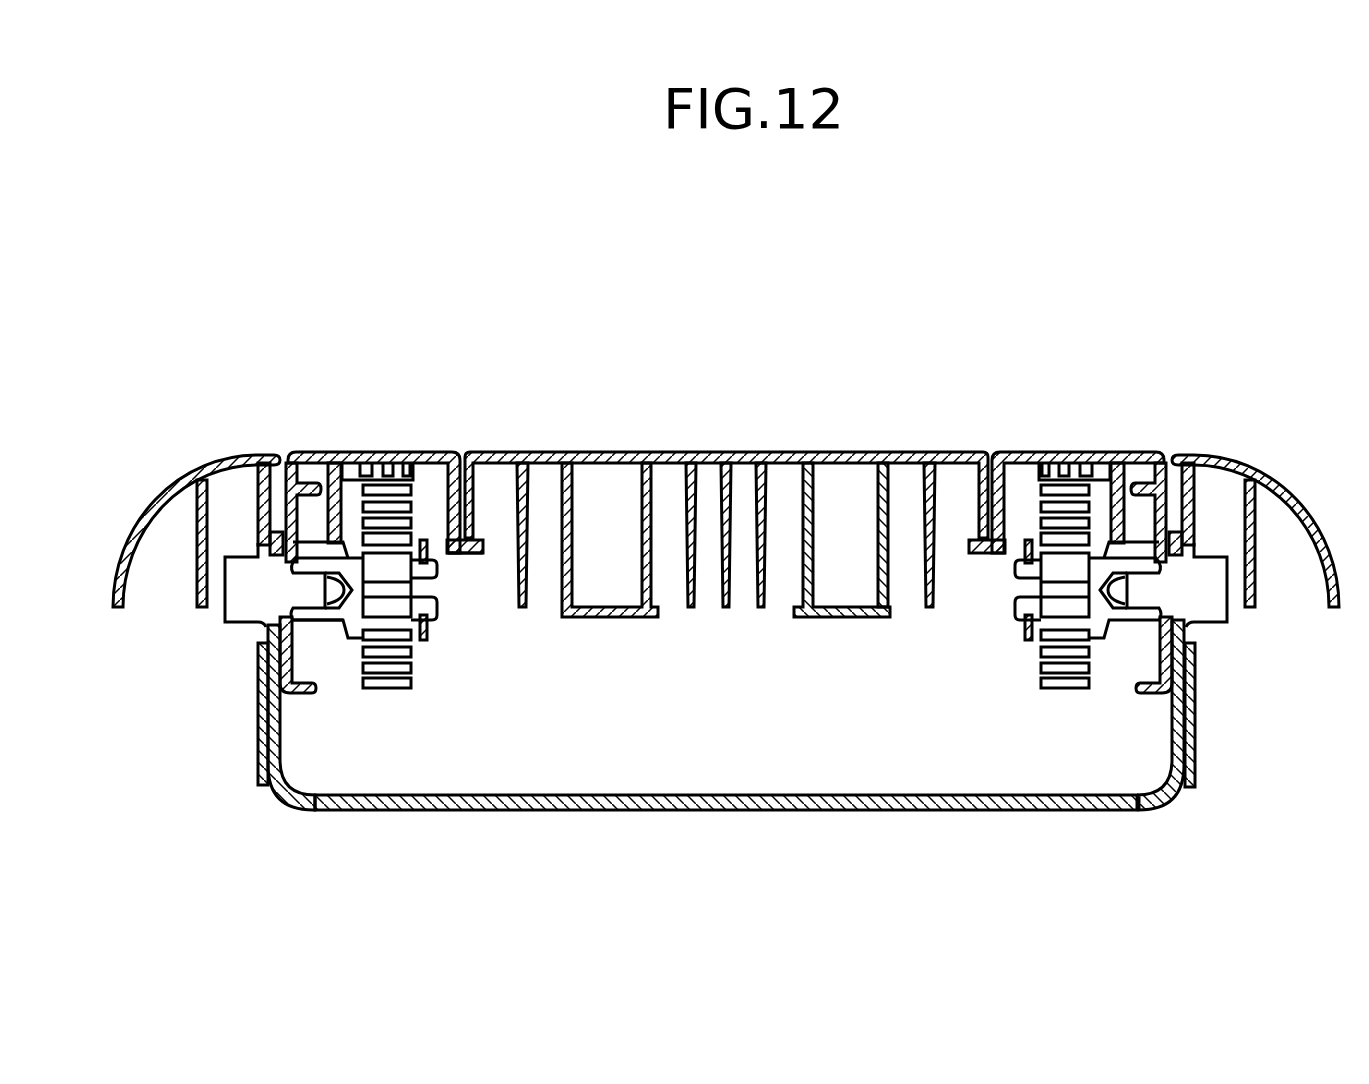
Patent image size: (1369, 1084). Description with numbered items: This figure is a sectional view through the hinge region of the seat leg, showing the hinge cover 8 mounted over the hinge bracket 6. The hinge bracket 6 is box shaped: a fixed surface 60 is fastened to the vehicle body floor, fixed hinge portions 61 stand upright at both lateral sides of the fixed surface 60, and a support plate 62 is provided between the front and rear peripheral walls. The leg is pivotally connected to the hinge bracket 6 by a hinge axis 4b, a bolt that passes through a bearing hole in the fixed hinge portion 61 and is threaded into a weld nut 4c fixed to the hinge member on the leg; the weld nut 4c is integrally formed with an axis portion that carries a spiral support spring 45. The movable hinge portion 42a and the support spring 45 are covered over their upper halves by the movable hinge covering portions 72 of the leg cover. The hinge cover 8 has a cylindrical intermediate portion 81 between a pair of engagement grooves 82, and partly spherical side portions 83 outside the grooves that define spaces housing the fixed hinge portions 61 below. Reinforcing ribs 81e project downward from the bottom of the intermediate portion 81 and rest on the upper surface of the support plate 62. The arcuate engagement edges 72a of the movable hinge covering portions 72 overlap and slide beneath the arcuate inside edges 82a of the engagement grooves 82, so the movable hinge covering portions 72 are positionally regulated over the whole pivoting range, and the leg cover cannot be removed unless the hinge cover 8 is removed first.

The hinge cover 8 is at (726, 521).
The intermediate portion 81 is at (692, 452).
The reinforcing ribs 81e is at (885, 503).
The engagement grooves 82 is at (463, 452).
The inside edges 82a is at (474, 537).
The movable hinge covering portions 72 is at (367, 452).
The engagement edge 72a is at (474, 554).
The support spring 45 is at (395, 688).
The movable hinge portion 42a is at (265, 503).
The side portions 83 is at (133, 527).
The hinge axis 4b is at (243, 603).
The weld nut 4c is at (332, 628).
The hinge bracket 6 is at (665, 781).
The fixed surface 60 is at (795, 810).
The fixed hinge portions 61 is at (258, 684).
The support plate 62 is at (833, 617).